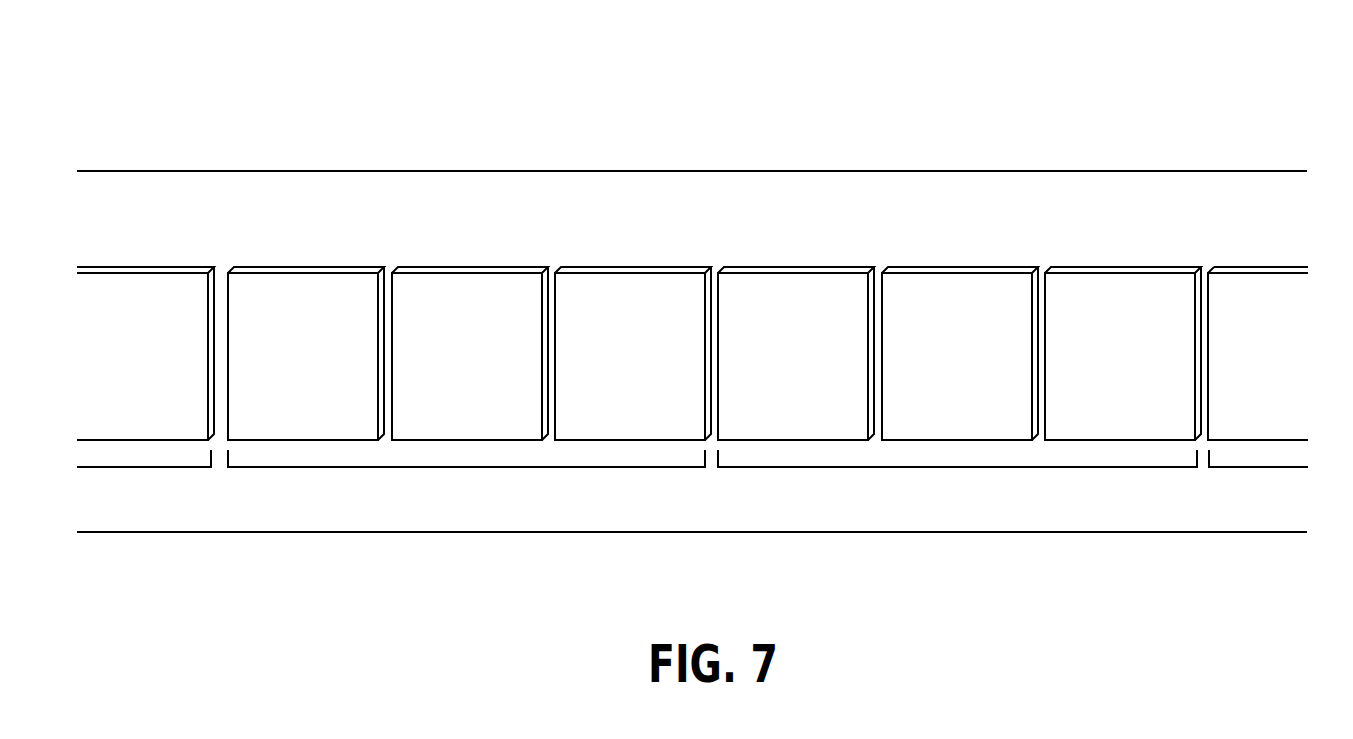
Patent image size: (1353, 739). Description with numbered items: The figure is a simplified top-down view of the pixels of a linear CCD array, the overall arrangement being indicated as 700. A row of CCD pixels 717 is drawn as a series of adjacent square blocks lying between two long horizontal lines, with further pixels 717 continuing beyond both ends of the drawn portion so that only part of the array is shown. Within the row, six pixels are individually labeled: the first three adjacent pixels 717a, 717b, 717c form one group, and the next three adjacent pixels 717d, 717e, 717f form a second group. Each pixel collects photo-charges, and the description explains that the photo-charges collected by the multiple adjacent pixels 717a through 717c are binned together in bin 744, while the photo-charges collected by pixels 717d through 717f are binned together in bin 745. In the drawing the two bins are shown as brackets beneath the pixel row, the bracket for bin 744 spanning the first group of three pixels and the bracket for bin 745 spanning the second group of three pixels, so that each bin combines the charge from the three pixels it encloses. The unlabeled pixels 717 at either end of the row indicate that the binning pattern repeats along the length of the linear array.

The pixel array structure 700 is at (257, 103).
The CCD pixel 717 is at (150, 367).
The CCD pixel 717a is at (334, 367).
The CCD pixel 717b is at (498, 367).
The CCD pixel 717c is at (660, 367).
The CCD pixel 717d is at (824, 367).
The CCD pixel 717e is at (988, 367).
The CCD pixel 717f is at (1150, 367).
The bin 744 is at (475, 467).
The bin 745 is at (927, 467).